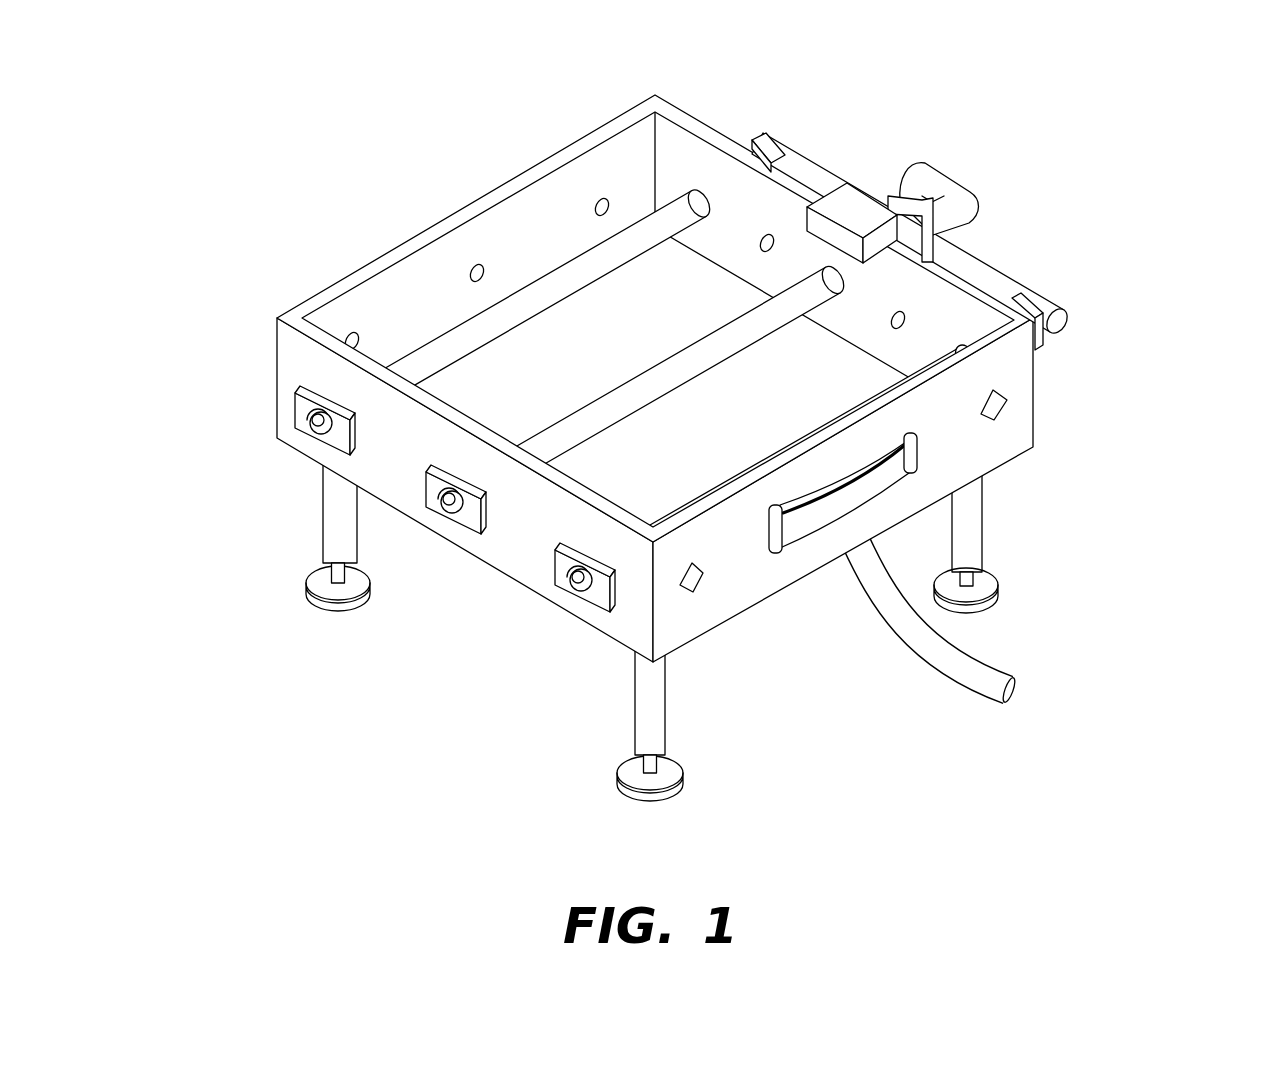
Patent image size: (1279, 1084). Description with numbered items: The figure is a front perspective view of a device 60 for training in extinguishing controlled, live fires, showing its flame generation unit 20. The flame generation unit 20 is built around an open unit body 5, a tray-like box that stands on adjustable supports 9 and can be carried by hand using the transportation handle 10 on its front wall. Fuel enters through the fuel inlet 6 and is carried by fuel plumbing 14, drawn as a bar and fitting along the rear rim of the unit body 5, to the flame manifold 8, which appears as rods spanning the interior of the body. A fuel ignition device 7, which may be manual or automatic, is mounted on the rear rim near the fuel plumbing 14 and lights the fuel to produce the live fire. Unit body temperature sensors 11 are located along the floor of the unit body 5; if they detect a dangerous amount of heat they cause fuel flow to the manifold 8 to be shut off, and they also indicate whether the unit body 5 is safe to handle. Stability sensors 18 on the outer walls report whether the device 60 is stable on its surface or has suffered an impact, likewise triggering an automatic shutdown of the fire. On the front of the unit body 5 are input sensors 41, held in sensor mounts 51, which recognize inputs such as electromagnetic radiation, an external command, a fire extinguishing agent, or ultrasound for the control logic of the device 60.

The unit body 5 is at (610, 437).
The fuel inlet 6 is at (947, 678).
The fuel ignition device 7 is at (857, 203).
The flame manifold 8 is at (553, 280).
The adjustable supports 9 is at (330, 520).
The transportation handle 10 is at (812, 523).
The unit body temperature sensors 11 is at (352, 336).
The fuel plumbing 14 is at (938, 178).
The stability sensors 18 is at (692, 586).
The flame generation unit 20 is at (1105, 358).
The input sensor 41 is at (587, 592).
The sensor mount 51 is at (563, 582).
The device for training in extinguishing fires 60 is at (723, 437).